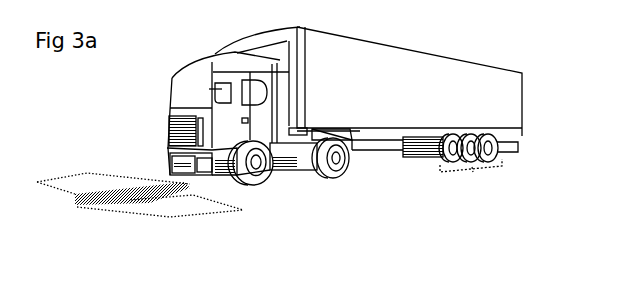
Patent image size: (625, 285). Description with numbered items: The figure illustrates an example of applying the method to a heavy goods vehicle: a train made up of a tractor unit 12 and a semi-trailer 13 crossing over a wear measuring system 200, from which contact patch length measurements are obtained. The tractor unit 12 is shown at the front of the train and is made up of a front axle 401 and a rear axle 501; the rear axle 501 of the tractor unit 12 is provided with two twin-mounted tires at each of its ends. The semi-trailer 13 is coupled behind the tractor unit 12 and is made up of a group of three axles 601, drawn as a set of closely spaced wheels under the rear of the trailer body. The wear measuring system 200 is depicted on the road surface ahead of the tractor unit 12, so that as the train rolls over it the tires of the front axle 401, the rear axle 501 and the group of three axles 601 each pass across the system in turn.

The wear measuring system 200 is at (56, 173).
The tractor unit 12 is at (180, 100).
The semi-trailer 13 is at (500, 102).
The front axle 401 is at (262, 186).
The rear axle 501 is at (335, 179).
The group of three axles 601 is at (473, 175).